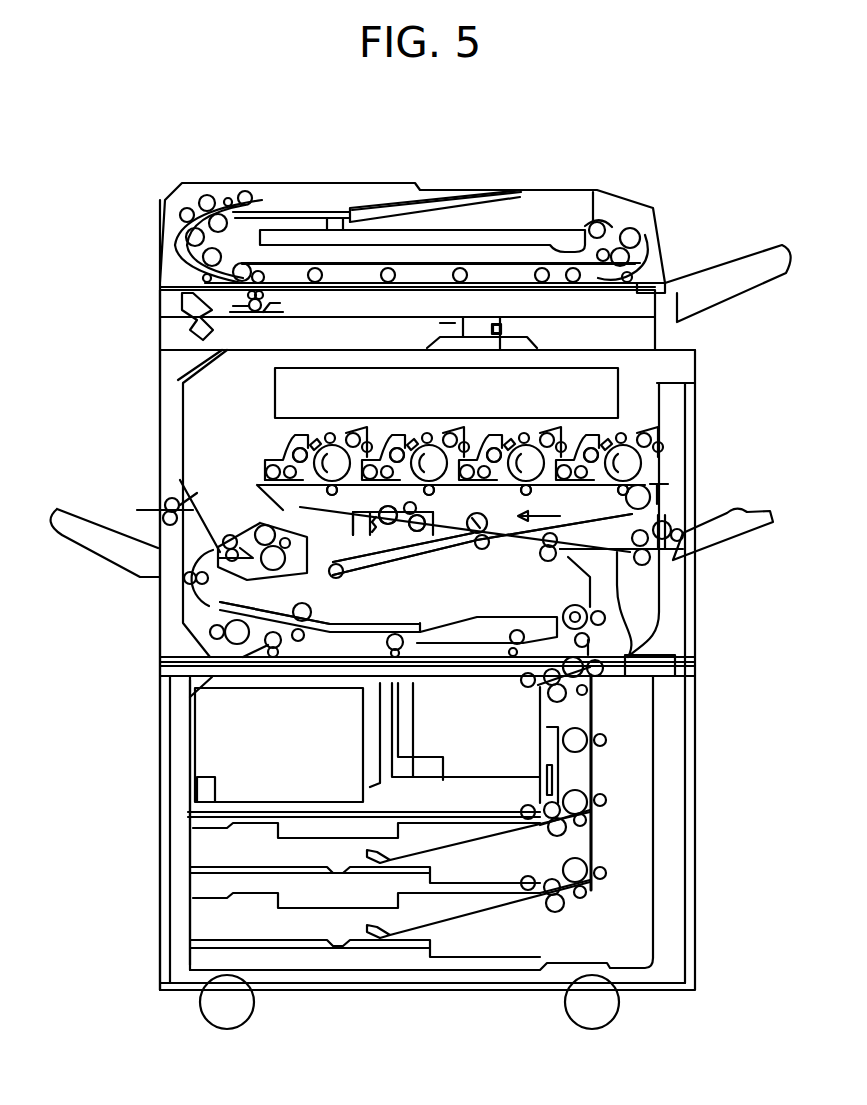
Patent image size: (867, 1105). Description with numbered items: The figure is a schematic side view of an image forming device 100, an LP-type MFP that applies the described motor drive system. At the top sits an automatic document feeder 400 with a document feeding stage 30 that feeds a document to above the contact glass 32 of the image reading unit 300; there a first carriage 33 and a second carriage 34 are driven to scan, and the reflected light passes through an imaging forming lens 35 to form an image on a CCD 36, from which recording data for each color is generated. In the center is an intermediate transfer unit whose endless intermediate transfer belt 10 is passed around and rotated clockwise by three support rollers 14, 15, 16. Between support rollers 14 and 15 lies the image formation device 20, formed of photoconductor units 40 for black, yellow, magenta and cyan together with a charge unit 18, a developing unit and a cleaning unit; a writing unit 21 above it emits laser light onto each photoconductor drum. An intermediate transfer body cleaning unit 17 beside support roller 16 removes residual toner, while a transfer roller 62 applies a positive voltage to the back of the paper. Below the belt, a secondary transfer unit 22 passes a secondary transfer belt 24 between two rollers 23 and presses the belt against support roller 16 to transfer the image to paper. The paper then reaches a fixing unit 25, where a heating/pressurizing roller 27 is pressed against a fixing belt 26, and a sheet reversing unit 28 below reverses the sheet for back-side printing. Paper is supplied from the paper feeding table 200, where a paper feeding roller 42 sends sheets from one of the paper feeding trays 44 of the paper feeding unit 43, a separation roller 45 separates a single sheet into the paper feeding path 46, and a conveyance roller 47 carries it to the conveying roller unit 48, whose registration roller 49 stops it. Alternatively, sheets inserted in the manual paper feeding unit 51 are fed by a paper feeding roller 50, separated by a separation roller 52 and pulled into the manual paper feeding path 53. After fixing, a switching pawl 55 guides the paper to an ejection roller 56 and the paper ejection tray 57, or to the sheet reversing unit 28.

The automatic document feeder (ADF) 400 is at (147, 219).
The image reading unit 300 is at (148, 303).
The image forming device 100 is at (148, 421).
The paper feeding table 200 is at (148, 751).
The document feeding stage 30 is at (372, 202).
The contact glass 32 is at (508, 263).
The first carriage 33 is at (264, 312).
The second carriage 34 is at (190, 323).
The imaging forming lens 35 is at (447, 325).
The CCD 36 is at (502, 329).
The writing unit 21 is at (620, 387).
The charge unit 18 is at (336, 439).
The photoconductor unit 40 is at (326, 450).
The image formation device 20 is at (276, 446).
The support roller 14 is at (652, 487).
The transfer roller 62 is at (340, 492).
The ejection roller 56 is at (170, 500).
The fixing belt 26 is at (256, 524).
The switching pawl 55 is at (228, 536).
The support roller 15 is at (360, 512).
The intermediate transfer belt 10 is at (370, 535).
The paper ejection tray 57 is at (104, 551).
The fixing unit 25 is at (214, 579).
The heating/pressurizing roller 27 is at (280, 568).
The rollers 23 is at (340, 579).
The intermediate transfer body cleaning unit 17 is at (402, 549).
The secondary transfer belt 24 is at (407, 563).
The support roller 16 is at (470, 536).
The secondary transfer unit 22 is at (499, 546).
The paper feeding roller 50 is at (668, 524).
The manual paper feeding unit 51 is at (726, 541).
The separation roller 52 is at (647, 566).
The manual paper feeding path 53 is at (592, 551).
The registration roller 49 is at (551, 562).
The conveying roller unit 48 is at (595, 603).
The sheet reversing unit 28 is at (430, 664).
The paper feeding roller 42 is at (522, 685).
The separation roller 45 is at (550, 700).
The conveyance roller 47 is at (598, 676).
The paper feeding path 46 is at (594, 767).
The paper feeding unit 43 is at (192, 876).
The paper feeding tray 44 is at (262, 806).